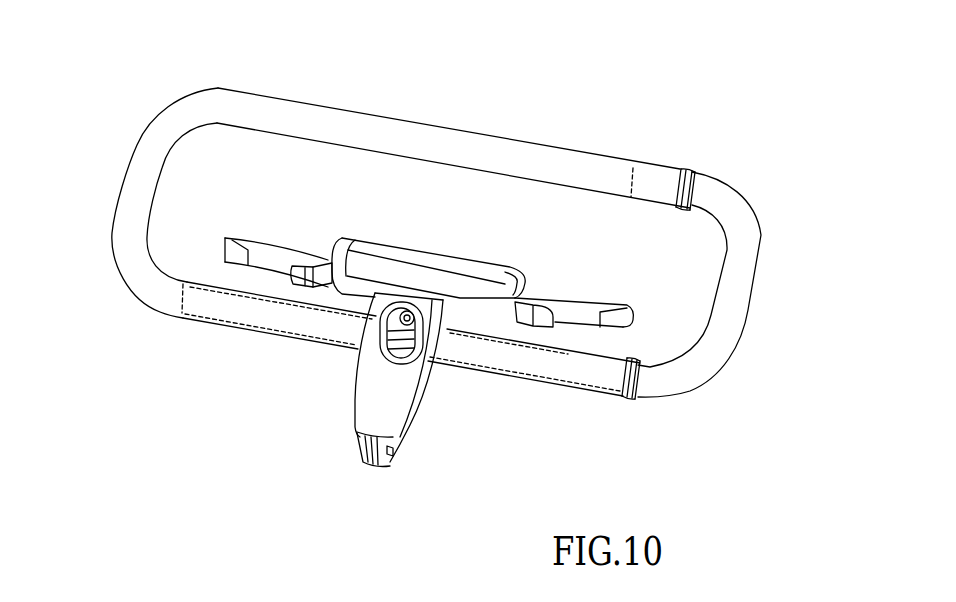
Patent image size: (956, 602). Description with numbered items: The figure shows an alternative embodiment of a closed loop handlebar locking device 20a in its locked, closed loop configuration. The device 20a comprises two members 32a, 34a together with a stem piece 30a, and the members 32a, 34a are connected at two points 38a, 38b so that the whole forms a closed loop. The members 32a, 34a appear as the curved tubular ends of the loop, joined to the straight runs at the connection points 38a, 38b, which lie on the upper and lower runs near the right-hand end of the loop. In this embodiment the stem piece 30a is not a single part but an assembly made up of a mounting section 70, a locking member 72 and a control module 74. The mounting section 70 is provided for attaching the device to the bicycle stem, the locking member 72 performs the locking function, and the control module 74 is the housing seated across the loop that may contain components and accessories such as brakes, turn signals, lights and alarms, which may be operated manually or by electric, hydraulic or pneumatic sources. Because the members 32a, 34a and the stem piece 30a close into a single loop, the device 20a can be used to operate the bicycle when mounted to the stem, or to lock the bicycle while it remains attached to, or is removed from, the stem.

The closed loop handlebar locking device 20a is at (457, 99).
The member 32a is at (125, 180).
The member 34a is at (755, 293).
The connection point 38a is at (688, 170).
The connection point 38b is at (628, 399).
The locking member 72 is at (349, 354).
The control module 74 is at (443, 244).
The mounting section 70 is at (439, 407).
The stem piece 30a is at (370, 472).